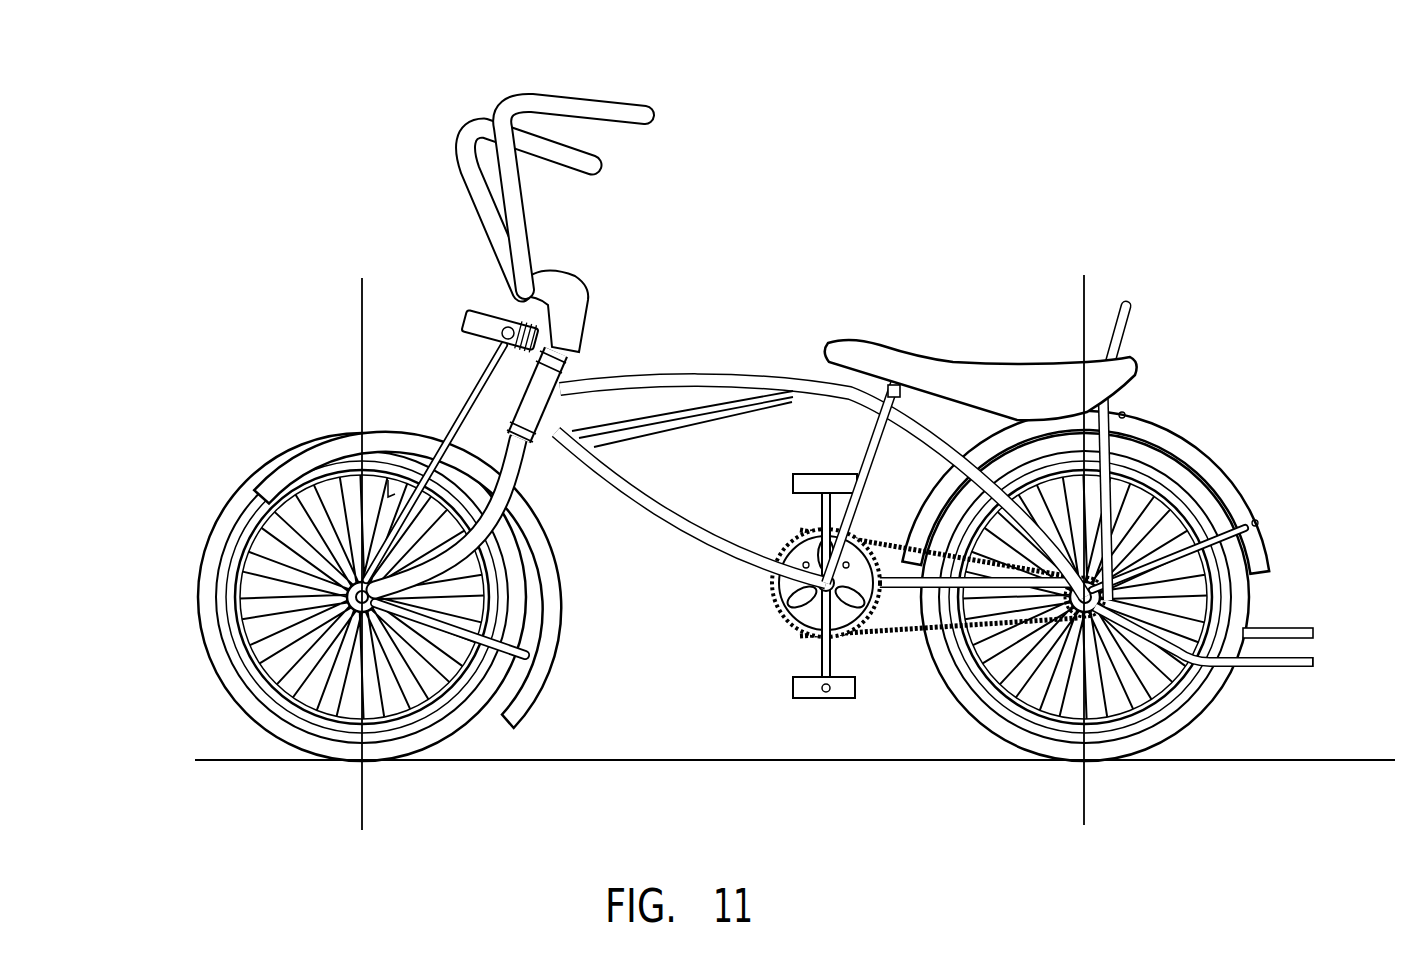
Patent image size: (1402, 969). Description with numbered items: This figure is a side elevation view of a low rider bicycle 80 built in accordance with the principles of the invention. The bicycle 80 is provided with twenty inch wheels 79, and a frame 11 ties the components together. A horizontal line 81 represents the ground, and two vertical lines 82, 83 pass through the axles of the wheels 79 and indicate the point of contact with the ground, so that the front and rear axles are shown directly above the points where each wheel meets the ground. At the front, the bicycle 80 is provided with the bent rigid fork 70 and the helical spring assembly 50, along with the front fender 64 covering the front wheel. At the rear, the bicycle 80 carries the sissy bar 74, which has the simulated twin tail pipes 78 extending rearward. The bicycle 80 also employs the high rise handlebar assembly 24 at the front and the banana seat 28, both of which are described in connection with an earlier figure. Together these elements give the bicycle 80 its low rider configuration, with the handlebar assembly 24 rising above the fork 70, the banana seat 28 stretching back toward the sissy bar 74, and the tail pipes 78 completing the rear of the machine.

The frame 11 is at (678, 382).
The high rise handlebar assembly 24 is at (560, 240).
The banana seat 28 is at (958, 367).
The helical spring assembly 50 is at (474, 310).
The front fender 64 is at (553, 597).
The bent rigid fork 70 is at (508, 478).
The sissy bar 74 is at (1133, 328).
The simulated twin tail pipes 78 is at (1313, 662).
The wheels 79 is at (255, 485).
The low rider bicycle 80 is at (820, 192).
The horizontal line 81 is at (597, 758).
The vertical line 82 is at (361, 322).
The vertical line 83 is at (1083, 293).